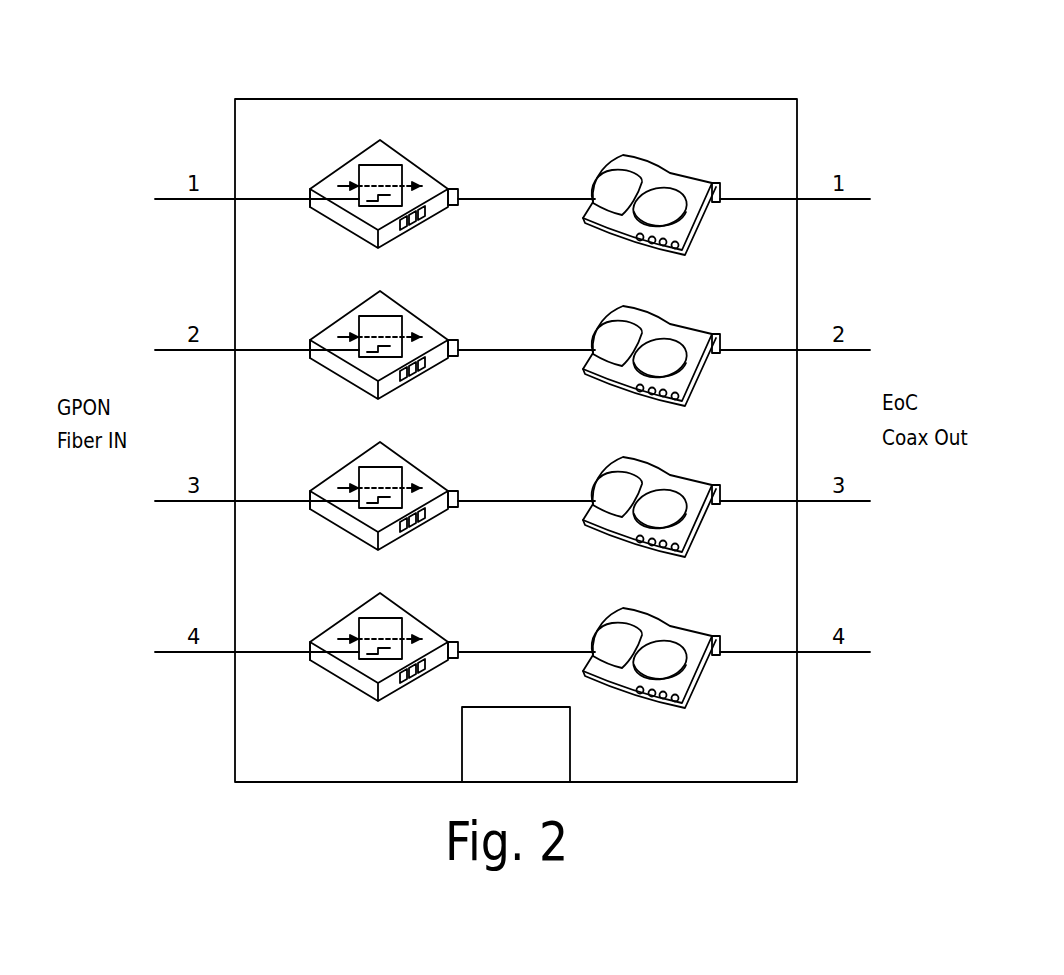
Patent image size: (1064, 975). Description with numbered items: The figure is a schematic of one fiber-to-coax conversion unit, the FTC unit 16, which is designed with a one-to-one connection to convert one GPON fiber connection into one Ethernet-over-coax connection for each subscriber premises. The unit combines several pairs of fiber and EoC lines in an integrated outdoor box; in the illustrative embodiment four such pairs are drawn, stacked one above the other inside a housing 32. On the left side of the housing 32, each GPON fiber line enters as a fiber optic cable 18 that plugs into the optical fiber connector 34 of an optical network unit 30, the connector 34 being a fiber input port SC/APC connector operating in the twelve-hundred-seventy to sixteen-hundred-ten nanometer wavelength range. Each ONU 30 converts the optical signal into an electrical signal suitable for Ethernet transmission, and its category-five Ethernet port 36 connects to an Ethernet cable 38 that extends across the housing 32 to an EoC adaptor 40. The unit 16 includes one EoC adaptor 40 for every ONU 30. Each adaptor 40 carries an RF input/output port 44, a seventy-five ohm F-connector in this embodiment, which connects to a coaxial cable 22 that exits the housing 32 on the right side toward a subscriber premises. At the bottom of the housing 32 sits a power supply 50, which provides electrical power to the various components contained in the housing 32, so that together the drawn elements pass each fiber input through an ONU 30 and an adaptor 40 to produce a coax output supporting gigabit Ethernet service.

The FTC unit 16 is at (948, 96).
The fiber optic cable 18 is at (172, 199).
The coaxial cable 22 is at (853, 199).
The optical network unit 30 is at (383, 142).
The housing 32 is at (515, 99).
The optical fiber connector 34 is at (309, 190).
The Ethernet port 36 is at (460, 188).
The Ethernet cable 38 is at (517, 198).
The EoC adaptor 40 is at (683, 178).
The RF input/output port 44 is at (722, 188).
The power supply 50 is at (570, 752).